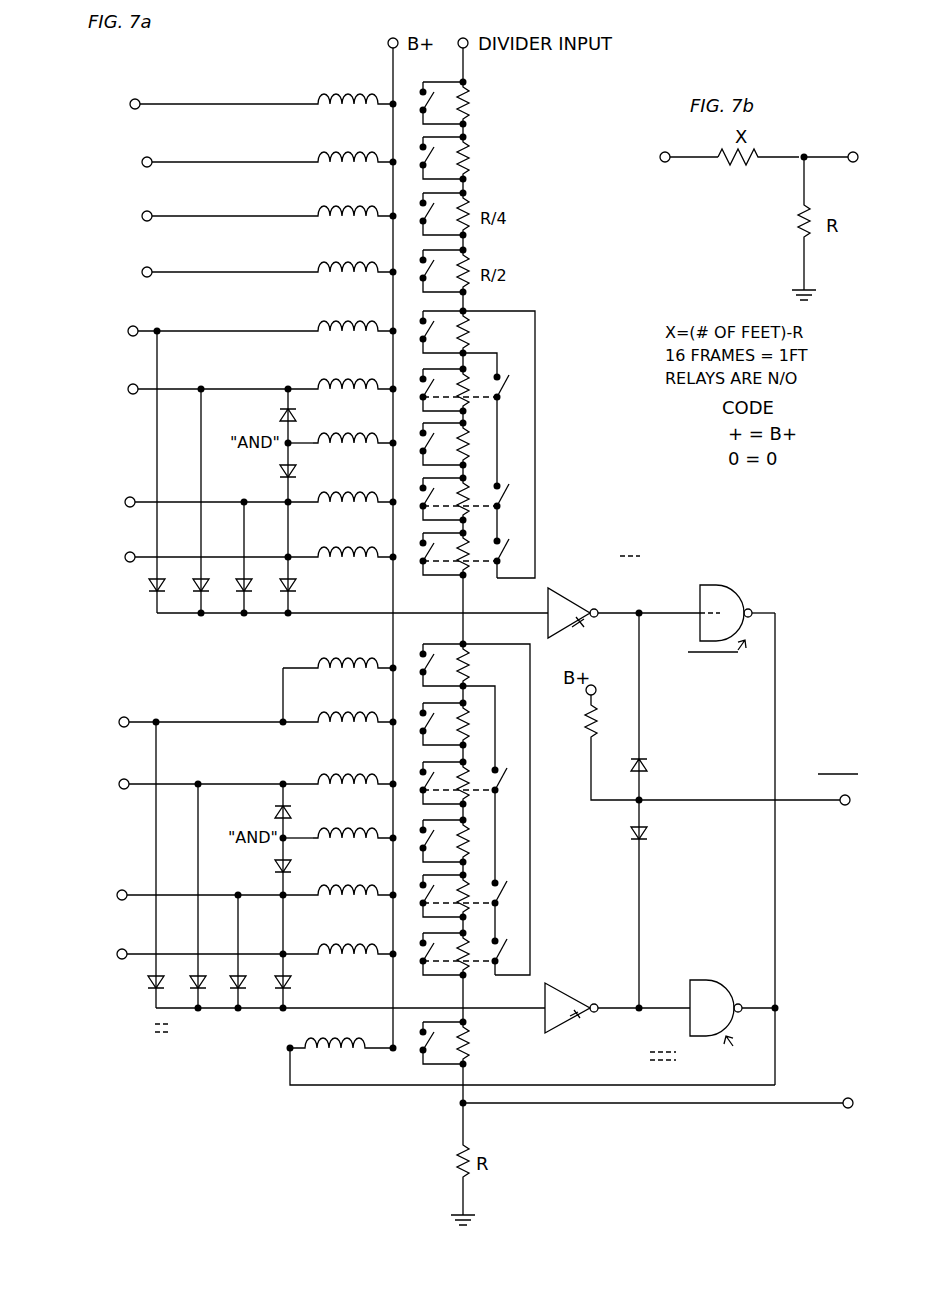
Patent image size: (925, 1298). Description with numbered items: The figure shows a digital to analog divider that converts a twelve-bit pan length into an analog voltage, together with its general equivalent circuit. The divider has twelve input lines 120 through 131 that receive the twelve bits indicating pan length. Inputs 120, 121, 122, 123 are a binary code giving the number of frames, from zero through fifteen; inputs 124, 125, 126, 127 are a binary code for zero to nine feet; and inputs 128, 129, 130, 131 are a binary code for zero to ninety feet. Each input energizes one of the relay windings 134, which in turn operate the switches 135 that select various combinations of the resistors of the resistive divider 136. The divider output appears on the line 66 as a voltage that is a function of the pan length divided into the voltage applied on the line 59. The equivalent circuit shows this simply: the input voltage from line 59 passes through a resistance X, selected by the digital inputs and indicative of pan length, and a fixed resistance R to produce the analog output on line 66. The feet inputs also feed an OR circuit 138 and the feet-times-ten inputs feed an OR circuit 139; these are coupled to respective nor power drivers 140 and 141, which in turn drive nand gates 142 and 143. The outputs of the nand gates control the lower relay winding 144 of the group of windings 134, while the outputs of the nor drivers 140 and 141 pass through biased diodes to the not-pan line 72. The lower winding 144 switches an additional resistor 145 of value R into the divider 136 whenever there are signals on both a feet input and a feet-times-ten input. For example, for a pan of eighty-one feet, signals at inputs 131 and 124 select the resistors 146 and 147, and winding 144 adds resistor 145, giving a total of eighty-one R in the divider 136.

In FIG. 7A, the line 59 is at (466, 70).
In FIG. 7B, the line 59 is at (700, 172).
In FIG. 7A, the line 66 is at (598, 1108).
In FIG. 7B, the line 66 is at (838, 153).
In FIG. 7A, the not-pan line 72 is at (812, 812).
In FIG. 7A, the input line 120 is at (137, 98).
In FIG. 7A, the input line 121 is at (150, 156).
In FIG. 7A, the input line 122 is at (148, 210).
In FIG. 7A, the input line 123 is at (152, 268).
In FIG. 7A, the input line 124 is at (140, 326).
In FIG. 7A, the input line 125 is at (136, 384).
In FIG. 7A, the input line 126 is at (131, 497).
In FIG. 7A, the input line 127 is at (134, 552).
In FIG. 7A, the input line 128 is at (127, 716).
In FIG. 7A, the input line 129 is at (128, 778).
In FIG. 7A, the input line 130 is at (125, 889).
In FIG. 7A, the input line 131 is at (126, 948).
In FIG. 7A, the relay windings 134 is at (348, 88).
In FIG. 7A, the switches 135 is at (384, 88).
In FIG. 7A, the resistive divider 136 is at (492, 136).
In FIG. 7A, the OR circuit 138 is at (252, 626).
In FIG. 7A, the OR circuit 139 is at (255, 1018).
In FIG. 7A, the nor power driver 140 is at (580, 608).
In FIG. 7A, the nor power driver 141 is at (572, 985).
In FIG. 7A, the nand gate 142 is at (738, 603).
In FIG. 7A, the nand gate 143 is at (715, 982).
In FIG. 7A, the lower relay winding 144 is at (340, 1056).
In FIG. 7A, the resistor 145 is at (468, 1038).
In FIG. 7A, the resistor 146 is at (462, 946).
In FIG. 7A, the resistor 147 is at (496, 328).